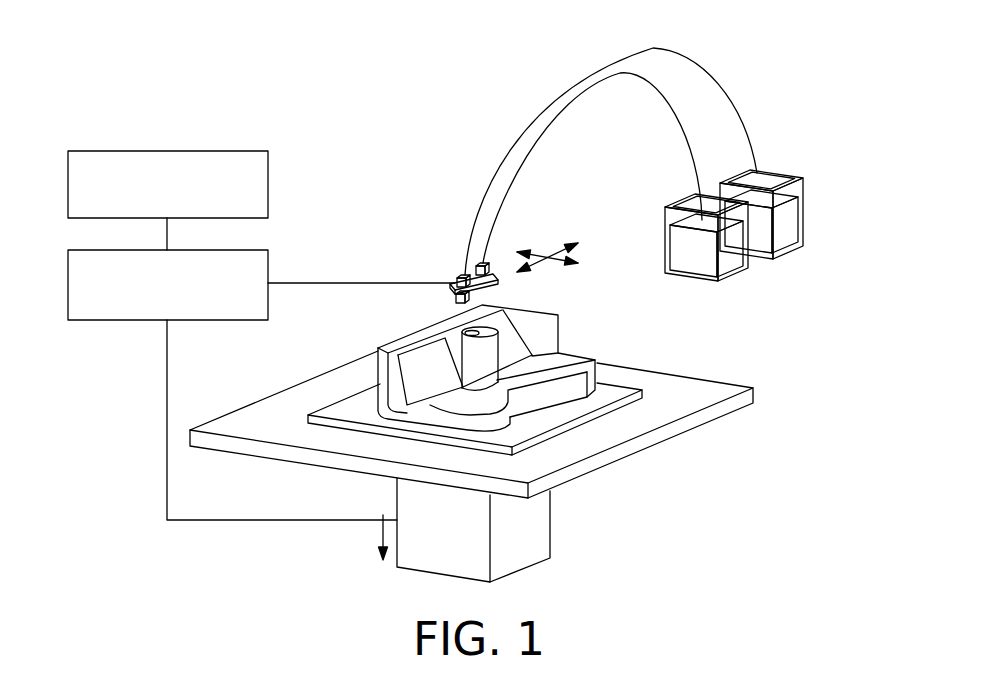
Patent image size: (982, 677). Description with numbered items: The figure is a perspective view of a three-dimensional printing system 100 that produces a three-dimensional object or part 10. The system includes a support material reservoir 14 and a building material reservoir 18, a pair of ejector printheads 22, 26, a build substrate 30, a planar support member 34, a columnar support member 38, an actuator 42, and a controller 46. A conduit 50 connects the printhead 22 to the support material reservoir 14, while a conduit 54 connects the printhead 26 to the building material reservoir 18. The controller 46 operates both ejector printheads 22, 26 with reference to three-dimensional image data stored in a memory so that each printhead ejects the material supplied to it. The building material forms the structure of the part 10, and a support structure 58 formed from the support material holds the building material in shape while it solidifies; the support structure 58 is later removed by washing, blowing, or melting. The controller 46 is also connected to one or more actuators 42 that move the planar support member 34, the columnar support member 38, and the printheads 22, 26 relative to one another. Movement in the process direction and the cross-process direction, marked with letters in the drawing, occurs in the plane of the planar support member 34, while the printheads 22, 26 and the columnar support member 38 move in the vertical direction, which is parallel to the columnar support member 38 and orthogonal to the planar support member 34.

The printing system 100 is at (400, 115).
The controller 46 is at (268, 185).
The actuator 42 is at (268, 265).
The conduit 54 is at (713, 92).
The conduit 50 is at (683, 140).
The support material reservoir 14 is at (733, 263).
The building material reservoir 18 is at (780, 251).
The ejector printhead 22 is at (430, 300).
The ejector printhead 26 is at (480, 299).
The three-dimensional object or part 10 is at (531, 368).
The support structure 58 is at (559, 345).
The build substrate 30 is at (572, 424).
The planar support member 34 is at (612, 473).
The columnar support member 38 is at (556, 549).